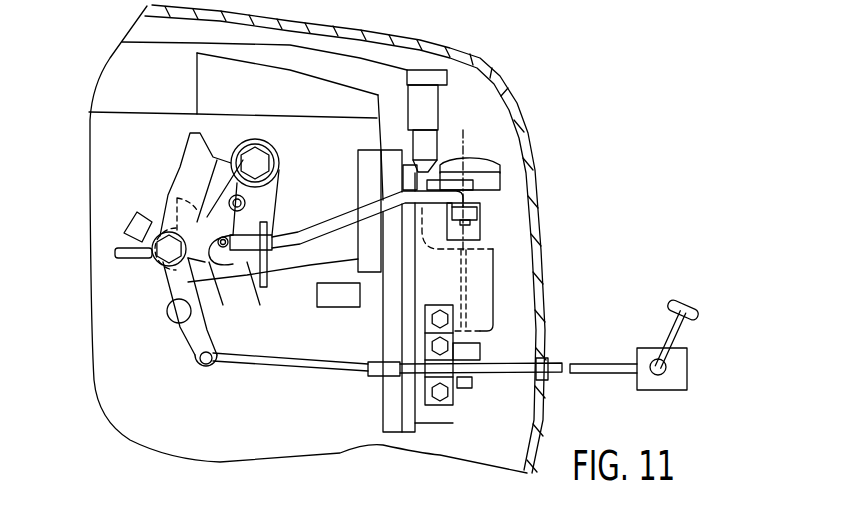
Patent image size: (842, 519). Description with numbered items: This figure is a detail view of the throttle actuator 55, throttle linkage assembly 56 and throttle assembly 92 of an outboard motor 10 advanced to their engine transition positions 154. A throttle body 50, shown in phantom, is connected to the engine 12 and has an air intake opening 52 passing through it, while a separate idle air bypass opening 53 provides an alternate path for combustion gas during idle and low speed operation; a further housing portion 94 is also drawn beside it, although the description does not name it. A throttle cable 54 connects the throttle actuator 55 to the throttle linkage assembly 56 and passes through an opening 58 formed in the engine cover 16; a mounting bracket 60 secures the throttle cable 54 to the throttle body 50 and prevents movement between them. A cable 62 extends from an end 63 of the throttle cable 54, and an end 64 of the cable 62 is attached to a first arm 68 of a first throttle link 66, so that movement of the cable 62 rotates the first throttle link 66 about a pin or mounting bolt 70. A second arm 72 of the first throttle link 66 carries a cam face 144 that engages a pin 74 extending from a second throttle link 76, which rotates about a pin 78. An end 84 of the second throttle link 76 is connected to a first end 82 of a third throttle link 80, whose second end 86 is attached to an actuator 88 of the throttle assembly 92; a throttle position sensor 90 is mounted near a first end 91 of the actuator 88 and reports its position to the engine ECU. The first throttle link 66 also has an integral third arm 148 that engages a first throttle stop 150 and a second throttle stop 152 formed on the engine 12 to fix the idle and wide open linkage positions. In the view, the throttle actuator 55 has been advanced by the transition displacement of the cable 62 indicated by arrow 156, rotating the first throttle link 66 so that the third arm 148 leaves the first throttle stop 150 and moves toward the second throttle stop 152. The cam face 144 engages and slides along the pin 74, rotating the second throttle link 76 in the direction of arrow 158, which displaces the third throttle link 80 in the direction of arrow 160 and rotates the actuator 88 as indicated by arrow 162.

The outboard motor 10 is at (579, 64).
The engine 12 is at (322, 430).
The engine cover 16 is at (445, 40).
The throttle body 50 is at (483, 307).
The opening 52 is at (547, 274).
The opening 53 is at (338, 306).
The throttle cable 54 is at (562, 346).
The throttle actuator 55 is at (684, 297).
The throttle linkage assembly 56 is at (130, 384).
The opening 58 is at (549, 378).
The mounting bracket 60 is at (444, 373).
The cable 62 is at (277, 370).
The end 63 is at (405, 377).
The end 64 is at (208, 370).
The first throttle link 66 is at (193, 357).
The first arm 68 is at (180, 280).
The pin or mounting bolt 70 is at (150, 277).
The second arm 72 is at (138, 197).
The pin 74 is at (250, 207).
The second throttle link 76 is at (223, 167).
The pin 78 is at (258, 157).
The third throttle link 80 is at (345, 213).
The first end 82 is at (243, 288).
The end 84 is at (209, 286).
The second end 86 is at (476, 196).
The actuator 88 is at (471, 230).
The throttle position sensor 90 is at (500, 173).
The first end 91 is at (503, 183).
The throttle assembly 92 is at (493, 108).
The housing 94 is at (487, 264).
The cam face 144 is at (197, 133).
The third arm 148 is at (117, 222).
The first throttle stop 150 is at (116, 252).
The second throttle stop 152 is at (185, 222).
The engine transition positions 154 is at (711, 204).
The arrow 156 is at (360, 355).
The arrow 158 is at (275, 197).
The arrow 160 is at (394, 230).
The arrow 162 is at (484, 142).